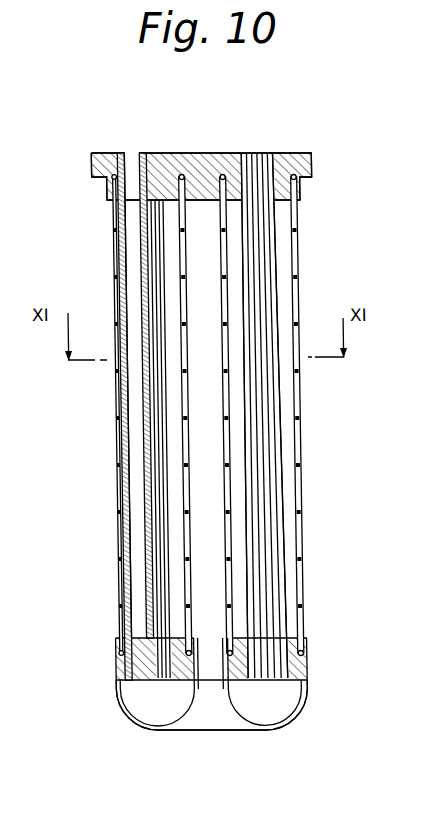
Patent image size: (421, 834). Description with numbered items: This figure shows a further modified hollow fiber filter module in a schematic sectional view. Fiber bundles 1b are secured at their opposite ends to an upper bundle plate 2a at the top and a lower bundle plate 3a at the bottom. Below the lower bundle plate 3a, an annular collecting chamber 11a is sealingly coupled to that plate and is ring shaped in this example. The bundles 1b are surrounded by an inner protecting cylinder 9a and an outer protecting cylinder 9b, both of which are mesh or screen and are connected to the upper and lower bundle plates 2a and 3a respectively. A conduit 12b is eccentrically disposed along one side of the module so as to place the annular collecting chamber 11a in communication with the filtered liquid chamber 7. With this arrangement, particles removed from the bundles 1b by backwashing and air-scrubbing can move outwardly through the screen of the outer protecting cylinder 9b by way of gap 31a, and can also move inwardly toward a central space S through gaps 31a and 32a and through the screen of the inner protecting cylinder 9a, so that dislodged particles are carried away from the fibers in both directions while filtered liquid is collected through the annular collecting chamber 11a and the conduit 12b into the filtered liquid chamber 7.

The filtered liquid chamber 7 is at (300, 99).
The upper bundle plate 2a is at (316, 160).
The lower bundle plate 3a is at (311, 655).
The inner protecting cylinder 9a is at (233, 453).
The outer protecting cylinder 9b is at (300, 243).
The fiber bundles 1b is at (158, 433).
The conduit 12b is at (124, 555).
The gap 32a is at (240, 542).
The gap 31a is at (293, 582).
The annular collecting chamber 11a is at (299, 693).
The space S is at (208, 747).